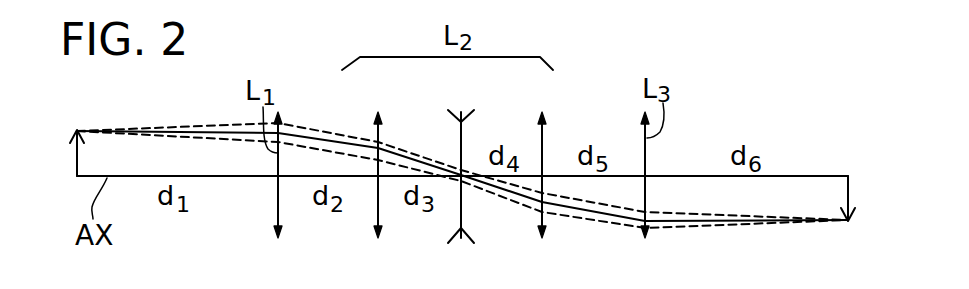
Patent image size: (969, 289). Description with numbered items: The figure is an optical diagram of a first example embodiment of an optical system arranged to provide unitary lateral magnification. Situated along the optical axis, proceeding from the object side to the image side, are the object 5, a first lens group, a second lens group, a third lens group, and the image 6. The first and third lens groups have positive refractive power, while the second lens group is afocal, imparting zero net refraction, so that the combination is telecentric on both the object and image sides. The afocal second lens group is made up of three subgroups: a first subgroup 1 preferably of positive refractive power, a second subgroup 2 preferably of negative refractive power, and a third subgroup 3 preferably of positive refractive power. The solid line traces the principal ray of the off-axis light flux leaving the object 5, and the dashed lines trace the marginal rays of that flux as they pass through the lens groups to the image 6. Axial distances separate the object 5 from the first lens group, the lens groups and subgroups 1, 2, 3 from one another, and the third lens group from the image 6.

The first subgroup 1 is at (378, 135).
The second subgroup 2 is at (461, 135).
The third subgroup 3 is at (542, 150).
The object 5 is at (77, 163).
The image 6 is at (849, 191).